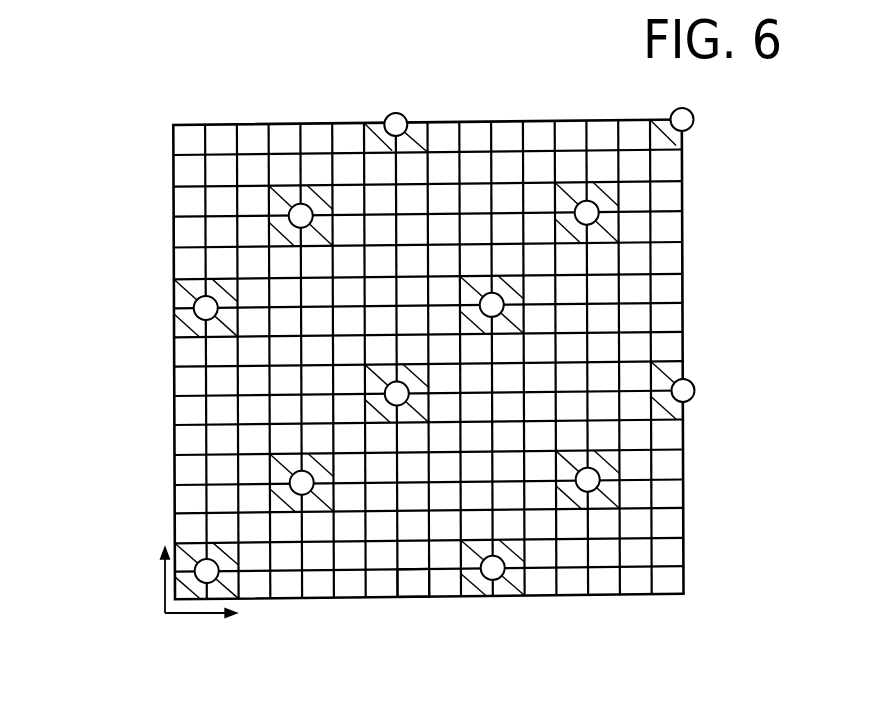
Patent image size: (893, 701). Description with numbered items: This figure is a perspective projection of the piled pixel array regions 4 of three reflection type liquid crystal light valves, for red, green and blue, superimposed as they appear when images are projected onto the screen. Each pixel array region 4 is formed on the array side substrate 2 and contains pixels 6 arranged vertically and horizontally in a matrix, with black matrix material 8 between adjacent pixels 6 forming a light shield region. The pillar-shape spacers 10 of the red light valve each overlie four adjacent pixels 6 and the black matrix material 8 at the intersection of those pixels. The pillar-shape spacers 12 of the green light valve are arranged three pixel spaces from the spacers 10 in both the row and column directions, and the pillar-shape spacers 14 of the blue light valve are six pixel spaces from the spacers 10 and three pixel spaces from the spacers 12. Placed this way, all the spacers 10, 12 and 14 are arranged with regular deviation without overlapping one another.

The array side substrate 2 is at (112, 604).
The pixel array region 4 is at (148, 435).
The pixel 6 is at (412, 582).
The black matrix material 8 is at (338, 583).
The pillar-shape spacer 10 is at (236, 598).
The pillar-shape spacer 12 is at (317, 493).
The pillar-shape spacer 14 is at (410, 397).